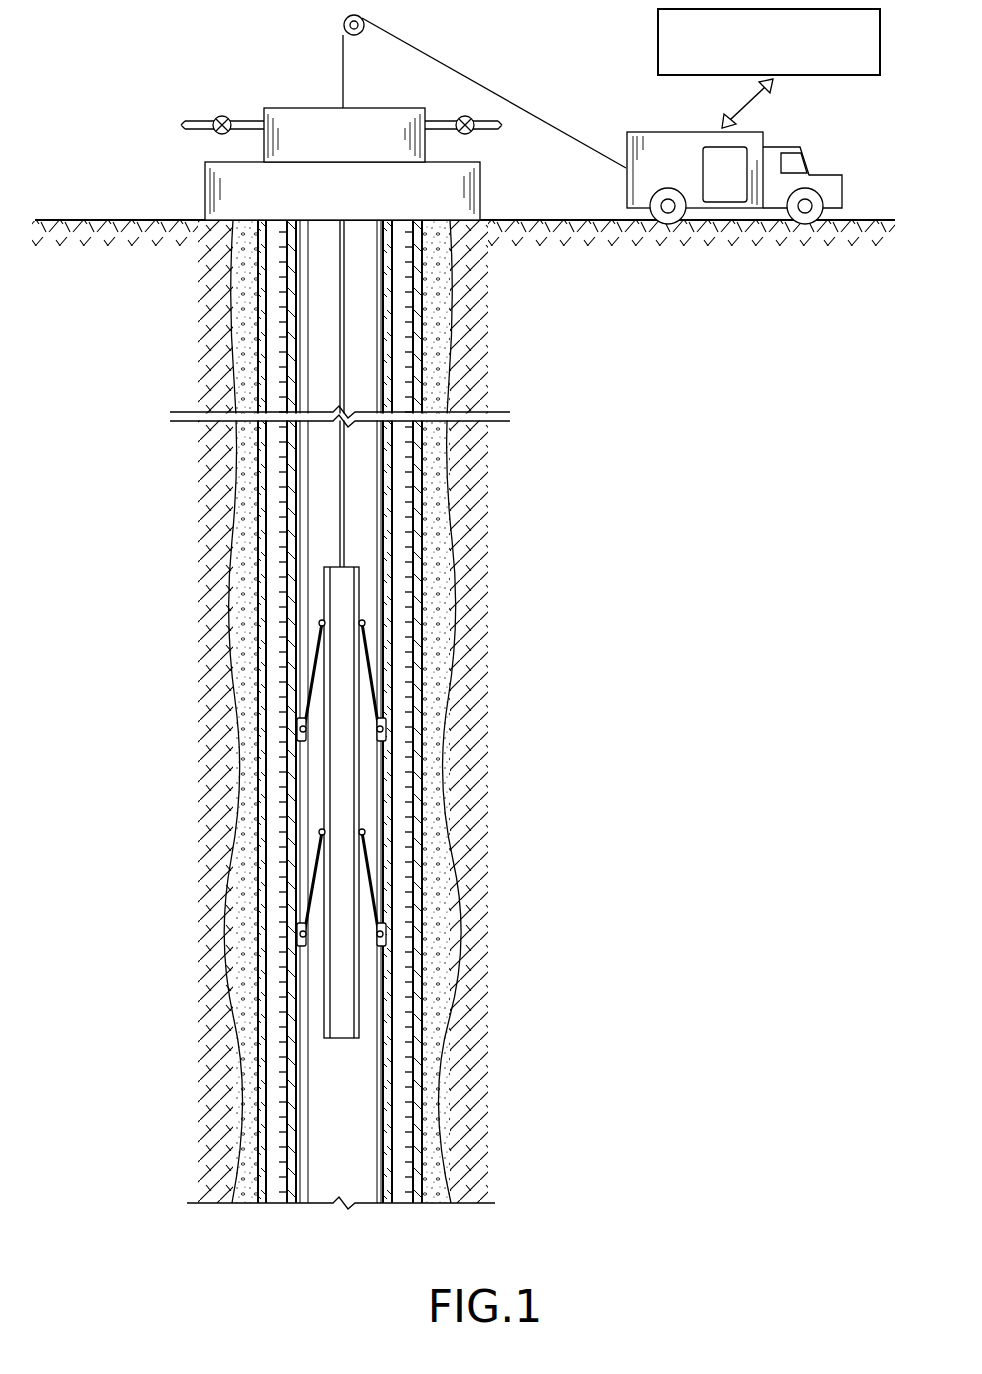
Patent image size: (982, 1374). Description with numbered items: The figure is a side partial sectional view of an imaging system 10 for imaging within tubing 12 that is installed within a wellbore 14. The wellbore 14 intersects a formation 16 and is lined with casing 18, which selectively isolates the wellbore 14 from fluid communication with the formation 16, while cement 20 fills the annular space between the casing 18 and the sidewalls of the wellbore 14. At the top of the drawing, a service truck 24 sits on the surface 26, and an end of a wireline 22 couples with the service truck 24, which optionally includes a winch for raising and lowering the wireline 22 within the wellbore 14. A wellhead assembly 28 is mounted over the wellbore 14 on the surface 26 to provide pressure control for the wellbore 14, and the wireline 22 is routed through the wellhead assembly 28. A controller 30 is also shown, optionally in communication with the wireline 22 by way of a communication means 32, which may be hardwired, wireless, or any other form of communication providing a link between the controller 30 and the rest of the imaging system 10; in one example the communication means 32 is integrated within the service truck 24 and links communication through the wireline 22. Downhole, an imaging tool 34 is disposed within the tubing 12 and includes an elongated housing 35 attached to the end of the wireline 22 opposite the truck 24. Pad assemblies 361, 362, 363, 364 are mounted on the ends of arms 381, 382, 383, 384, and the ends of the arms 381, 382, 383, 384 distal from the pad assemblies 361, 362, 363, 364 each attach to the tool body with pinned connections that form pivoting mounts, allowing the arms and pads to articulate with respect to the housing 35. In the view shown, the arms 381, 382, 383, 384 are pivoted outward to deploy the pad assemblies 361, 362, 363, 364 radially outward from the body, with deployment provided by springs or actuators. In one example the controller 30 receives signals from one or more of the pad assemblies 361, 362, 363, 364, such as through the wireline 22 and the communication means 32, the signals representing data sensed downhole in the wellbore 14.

The imaging system 10 is at (103, 97).
The tubing 12 is at (395, 538).
The wellbore 14 is at (275, 1210).
The formation 16 is at (462, 1087).
The casing 18 is at (422, 1042).
The cement 20 is at (418, 1155).
The wireline 22 is at (345, 313).
The service truck 24 is at (812, 142).
The surface 26 is at (91, 220).
The wellhead assembly 28 is at (252, 100).
The controller 30 is at (658, 38).
The communication means 32 is at (728, 100).
The imaging tool 34 is at (340, 767).
The elongated housing 35 is at (338, 782).
The arm 381 is at (363, 663).
The arm 382 is at (317, 665).
The arm 383 is at (370, 887).
The arm 384 is at (312, 882).
The pad assembly 361 is at (383, 728).
The pad assembly 362 is at (300, 730).
The pad assembly 363 is at (383, 938).
The pad assembly 364 is at (300, 934).